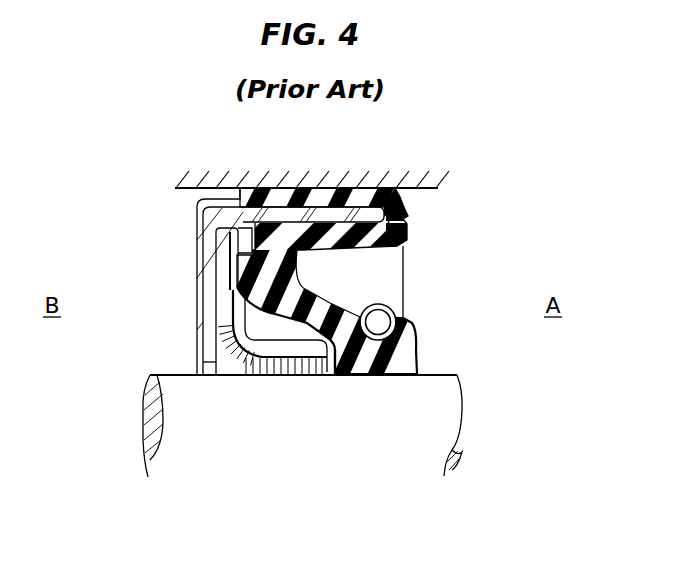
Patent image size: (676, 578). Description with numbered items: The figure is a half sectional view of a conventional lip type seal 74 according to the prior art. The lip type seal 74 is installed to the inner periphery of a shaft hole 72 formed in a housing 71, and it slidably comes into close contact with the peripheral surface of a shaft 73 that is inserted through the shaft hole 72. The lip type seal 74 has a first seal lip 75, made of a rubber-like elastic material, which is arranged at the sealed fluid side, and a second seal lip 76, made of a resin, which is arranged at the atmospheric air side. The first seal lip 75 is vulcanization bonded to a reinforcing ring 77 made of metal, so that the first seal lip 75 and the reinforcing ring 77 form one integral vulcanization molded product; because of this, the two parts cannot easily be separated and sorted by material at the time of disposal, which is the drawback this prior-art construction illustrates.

The housing 71 is at (427, 182).
The shaft hole 72 is at (187, 204).
The shaft 73 is at (393, 450).
The lip type seal 74 is at (418, 283).
The first seal lip 75 is at (378, 348).
The second seal lip 76 is at (283, 355).
The reinforcing ring 77 is at (210, 275).